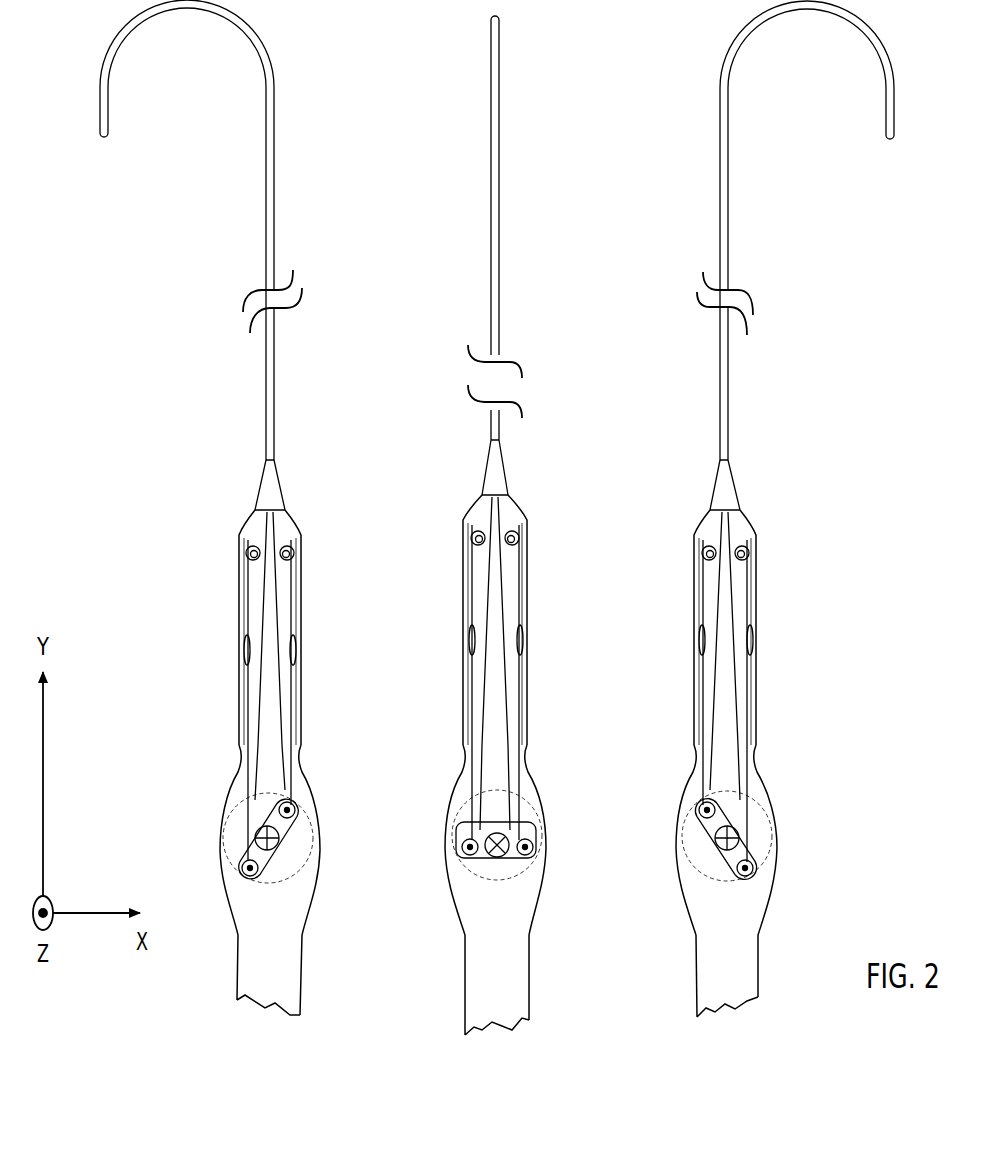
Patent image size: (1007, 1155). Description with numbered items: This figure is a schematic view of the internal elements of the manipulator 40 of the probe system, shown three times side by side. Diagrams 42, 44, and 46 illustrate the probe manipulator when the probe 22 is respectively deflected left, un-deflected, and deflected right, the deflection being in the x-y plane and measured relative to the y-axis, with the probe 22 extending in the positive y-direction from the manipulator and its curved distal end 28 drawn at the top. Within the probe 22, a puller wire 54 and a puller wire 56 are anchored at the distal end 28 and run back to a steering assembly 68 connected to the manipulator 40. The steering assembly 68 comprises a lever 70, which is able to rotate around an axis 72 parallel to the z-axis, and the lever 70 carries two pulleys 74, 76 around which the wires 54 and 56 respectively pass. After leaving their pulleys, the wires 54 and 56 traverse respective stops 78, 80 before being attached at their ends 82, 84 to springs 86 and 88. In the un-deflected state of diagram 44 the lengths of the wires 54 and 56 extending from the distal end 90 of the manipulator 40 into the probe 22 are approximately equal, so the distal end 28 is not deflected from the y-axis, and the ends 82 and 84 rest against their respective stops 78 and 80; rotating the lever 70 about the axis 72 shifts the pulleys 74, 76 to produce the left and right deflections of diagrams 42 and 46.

The probe 22 is at (276, 370).
The distal end 28 is at (106, 126).
The manipulator 40 is at (318, 852).
The diagram 42 is at (325, 998).
The diagram 44 is at (553, 942).
The diagram 46 is at (782, 942).
The puller wire 54 is at (260, 704).
The puller wire 56 is at (280, 695).
The steering assembly 68 is at (190, 940).
The lever 70 is at (262, 886).
The axis 72 is at (273, 845).
The pulley 74 is at (250, 877).
The pulley 76 is at (296, 812).
The stop 78 is at (244, 645).
The stop 80 is at (296, 645).
The end 82 is at (244, 622).
The end 84 is at (294, 575).
The spring 86 is at (245, 553).
The spring 88 is at (294, 553).
The distal end 90 is at (284, 511).